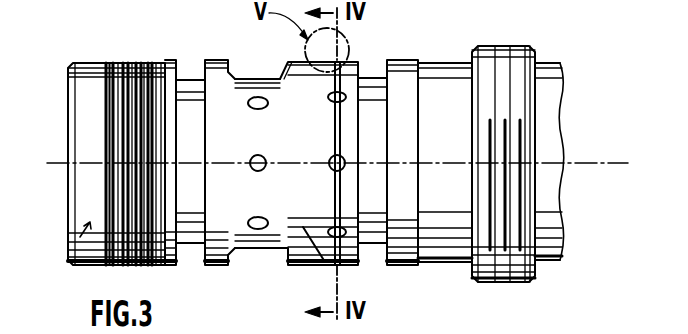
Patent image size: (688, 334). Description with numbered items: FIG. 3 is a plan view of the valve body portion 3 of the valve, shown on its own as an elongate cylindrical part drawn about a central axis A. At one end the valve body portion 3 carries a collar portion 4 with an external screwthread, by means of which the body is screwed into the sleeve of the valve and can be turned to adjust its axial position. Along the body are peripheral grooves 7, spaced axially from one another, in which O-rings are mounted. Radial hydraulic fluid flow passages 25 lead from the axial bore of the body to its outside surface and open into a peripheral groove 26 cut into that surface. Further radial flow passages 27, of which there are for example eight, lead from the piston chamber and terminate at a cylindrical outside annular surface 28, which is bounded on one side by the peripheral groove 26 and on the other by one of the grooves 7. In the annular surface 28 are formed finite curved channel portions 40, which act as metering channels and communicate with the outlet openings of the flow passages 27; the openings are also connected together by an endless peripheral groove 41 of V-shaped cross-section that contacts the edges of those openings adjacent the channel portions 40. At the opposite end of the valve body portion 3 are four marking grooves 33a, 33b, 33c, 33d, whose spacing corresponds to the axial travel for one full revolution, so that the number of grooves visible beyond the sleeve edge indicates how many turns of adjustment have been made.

The valve body portion 3 is at (70, 245).
The collar portion 4 is at (500, 283).
The peripheral grooves 7 is at (185, 245).
The radial hydraulic fluid flow passages 25 is at (258, 97).
The peripheral groove 26 is at (244, 251).
The radial flow passages 27 is at (305, 258).
The cylindrical outside annular surface 28 is at (320, 200).
The marking groove 33a is at (107, 100).
The marking groove 33b is at (113, 64).
The marking groove 33c is at (138, 62).
The marking groove 33d is at (150, 62).
The curved channel portions 40 is at (330, 157).
The endless peripheral groove 41 is at (339, 132).
The axis A is at (606, 163).